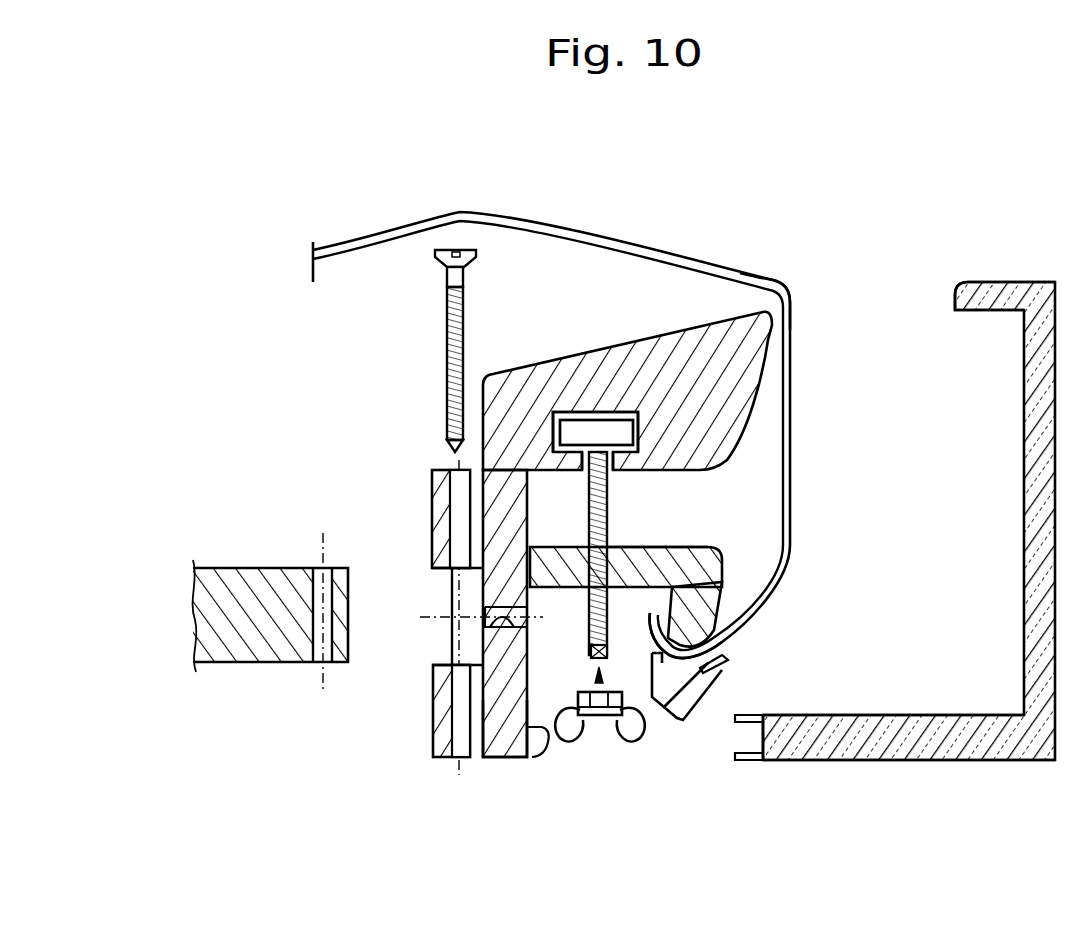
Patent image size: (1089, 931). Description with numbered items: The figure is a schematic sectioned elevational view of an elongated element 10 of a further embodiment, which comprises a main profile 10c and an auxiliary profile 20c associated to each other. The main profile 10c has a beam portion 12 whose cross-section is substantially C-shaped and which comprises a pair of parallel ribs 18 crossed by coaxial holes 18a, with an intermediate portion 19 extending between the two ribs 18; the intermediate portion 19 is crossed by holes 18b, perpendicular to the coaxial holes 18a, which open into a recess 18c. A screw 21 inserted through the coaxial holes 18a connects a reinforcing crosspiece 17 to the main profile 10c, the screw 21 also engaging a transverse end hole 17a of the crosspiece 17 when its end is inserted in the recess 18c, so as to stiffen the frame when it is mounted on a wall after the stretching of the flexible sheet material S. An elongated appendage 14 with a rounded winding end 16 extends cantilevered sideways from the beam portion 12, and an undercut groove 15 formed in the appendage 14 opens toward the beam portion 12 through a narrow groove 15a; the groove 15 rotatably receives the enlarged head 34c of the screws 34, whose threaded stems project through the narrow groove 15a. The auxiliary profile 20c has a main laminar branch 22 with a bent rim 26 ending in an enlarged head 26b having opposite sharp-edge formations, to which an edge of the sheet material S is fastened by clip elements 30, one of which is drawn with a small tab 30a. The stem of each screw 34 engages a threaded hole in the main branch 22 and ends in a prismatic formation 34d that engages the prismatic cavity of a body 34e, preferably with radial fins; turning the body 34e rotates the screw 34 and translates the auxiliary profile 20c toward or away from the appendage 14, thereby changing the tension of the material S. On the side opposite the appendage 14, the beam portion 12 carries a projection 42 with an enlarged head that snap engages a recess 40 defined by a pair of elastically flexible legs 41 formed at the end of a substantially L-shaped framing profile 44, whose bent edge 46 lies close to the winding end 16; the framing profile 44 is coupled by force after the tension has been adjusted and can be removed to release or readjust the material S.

The elongated element 10 is at (292, 415).
The flexible sheet material S is at (527, 223).
The beam portion 12 is at (500, 713).
The elongated appendage 14 is at (703, 353).
The undercut groove 15 is at (630, 437).
The narrow groove 15a is at (593, 443).
The rounded winding end 16 is at (787, 292).
The reinforcing crosspiece 17 is at (262, 585).
The transverse end hole 17a is at (330, 668).
The parallel ribs 18 is at (433, 488).
The coaxial holes 18a is at (455, 452).
The holes 18b is at (525, 652).
The recess 18c is at (448, 588).
The intermediate portion 19 is at (482, 653).
The main profile 10c is at (502, 675).
The auxiliary profile 20c is at (752, 551).
The screw 21 is at (447, 292).
The main laminar branch 22 is at (668, 550).
The bent rim 26 is at (720, 590).
The enlarged head 26b is at (703, 642).
The clip elements 30 is at (668, 712).
The bracket tab 30a is at (728, 662).
The screws 34 is at (630, 493).
The enlarged head 34c is at (567, 410).
The prismatic formation 34d is at (609, 653).
The body 34e is at (593, 727).
The recess 40 is at (730, 740).
The elastically flexible legs 41 is at (760, 712).
The projection 42 is at (546, 735).
The framing profile 44 is at (1038, 432).
The bent edge 46 is at (970, 285).